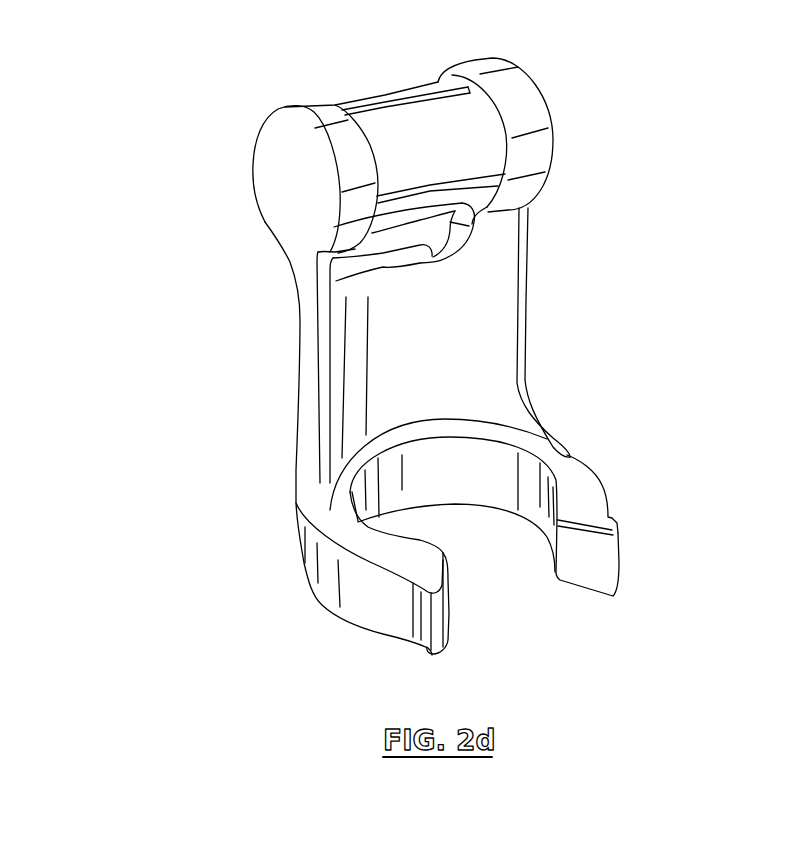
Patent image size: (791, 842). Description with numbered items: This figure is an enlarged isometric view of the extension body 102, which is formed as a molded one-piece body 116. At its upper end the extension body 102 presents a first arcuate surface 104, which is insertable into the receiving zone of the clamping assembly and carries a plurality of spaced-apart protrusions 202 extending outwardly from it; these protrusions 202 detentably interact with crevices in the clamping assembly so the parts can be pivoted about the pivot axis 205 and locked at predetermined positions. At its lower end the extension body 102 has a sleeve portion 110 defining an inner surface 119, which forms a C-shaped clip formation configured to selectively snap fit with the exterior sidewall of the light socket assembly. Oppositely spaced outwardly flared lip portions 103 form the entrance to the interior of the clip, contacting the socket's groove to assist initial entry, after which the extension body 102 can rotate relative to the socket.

The extension body 102 is at (222, 486).
The first arcuate surface 104 is at (444, 152).
The protrusions 202 is at (400, 103).
The pivot axis 205 is at (381, 252).
The molded one-piece body 116 is at (483, 300).
The inner surface 119 is at (461, 482).
The sleeve portion 110 is at (378, 592).
The oppositely spaced outwardly flared lip portions 103 is at (441, 610).